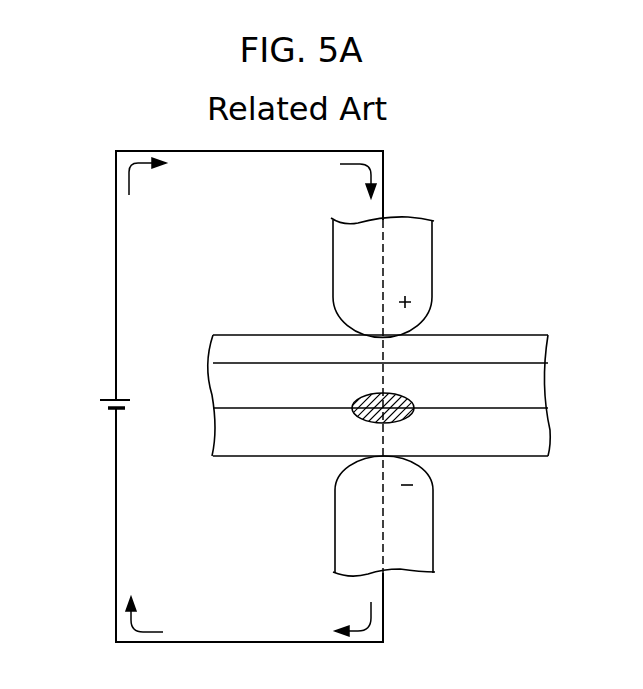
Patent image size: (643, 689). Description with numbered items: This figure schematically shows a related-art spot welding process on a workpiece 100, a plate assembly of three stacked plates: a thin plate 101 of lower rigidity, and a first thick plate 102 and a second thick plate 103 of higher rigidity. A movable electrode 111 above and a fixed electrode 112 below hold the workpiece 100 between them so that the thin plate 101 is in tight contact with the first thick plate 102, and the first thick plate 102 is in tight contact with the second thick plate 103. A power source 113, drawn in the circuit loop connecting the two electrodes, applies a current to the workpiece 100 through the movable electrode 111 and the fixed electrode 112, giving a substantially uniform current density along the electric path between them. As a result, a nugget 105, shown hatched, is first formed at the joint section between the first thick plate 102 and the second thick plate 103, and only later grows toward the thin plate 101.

The workpiece 100 is at (408, 380).
The thin plate 101 is at (530, 348).
The first thick plate 102 is at (531, 385).
The second thick plate 103 is at (531, 432).
The nugget 105 is at (416, 412).
The movable electrode 111 is at (420, 262).
The fixed electrode 112 is at (423, 538).
The power source 113 is at (110, 398).